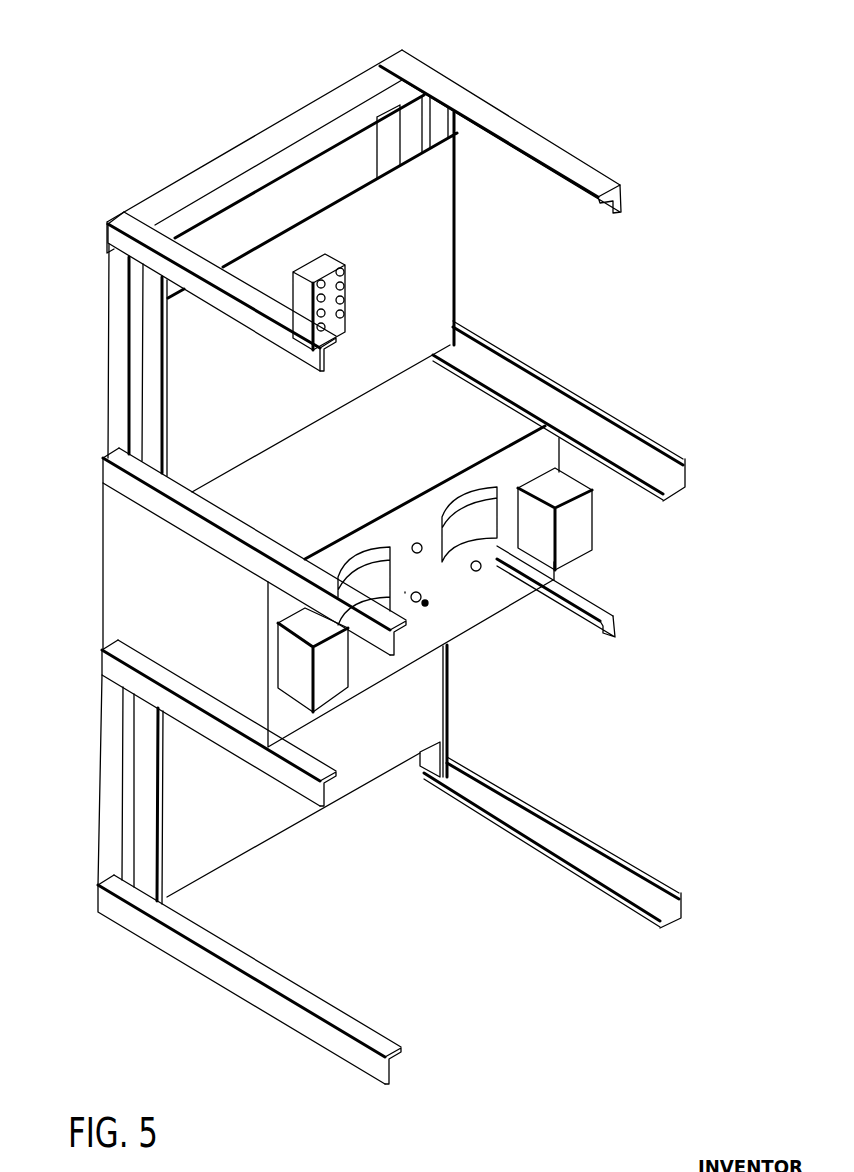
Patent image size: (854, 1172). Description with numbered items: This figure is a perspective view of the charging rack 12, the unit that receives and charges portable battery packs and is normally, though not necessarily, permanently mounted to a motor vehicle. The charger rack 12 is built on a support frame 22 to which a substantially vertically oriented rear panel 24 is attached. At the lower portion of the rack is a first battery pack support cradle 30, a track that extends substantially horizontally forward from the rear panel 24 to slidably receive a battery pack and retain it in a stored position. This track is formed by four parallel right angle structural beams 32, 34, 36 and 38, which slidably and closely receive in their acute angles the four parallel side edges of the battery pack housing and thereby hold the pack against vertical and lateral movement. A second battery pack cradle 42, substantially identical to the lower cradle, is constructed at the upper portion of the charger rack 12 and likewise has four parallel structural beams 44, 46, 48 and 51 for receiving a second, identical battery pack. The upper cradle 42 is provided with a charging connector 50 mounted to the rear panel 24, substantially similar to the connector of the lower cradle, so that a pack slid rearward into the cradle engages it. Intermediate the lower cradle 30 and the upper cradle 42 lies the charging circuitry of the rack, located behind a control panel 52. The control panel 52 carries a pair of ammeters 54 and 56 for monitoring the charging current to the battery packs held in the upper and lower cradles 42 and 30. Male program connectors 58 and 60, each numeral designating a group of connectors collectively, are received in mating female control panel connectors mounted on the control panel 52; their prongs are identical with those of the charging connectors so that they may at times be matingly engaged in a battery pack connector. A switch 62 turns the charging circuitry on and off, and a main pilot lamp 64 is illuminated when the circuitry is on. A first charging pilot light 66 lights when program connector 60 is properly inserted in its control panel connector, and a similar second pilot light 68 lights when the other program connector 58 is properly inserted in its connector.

The charging rack 12 is at (535, 351).
The support frame 22 is at (157, 363).
The rear panel 24 is at (423, 196).
The first battery pack support cradle 30 is at (472, 729).
The structural beam 32 is at (673, 920).
The structural beam 34 is at (385, 1068).
The structural beam 36 is at (303, 787).
The structural beam 38 is at (578, 610).
The second battery pack cradle 42 is at (480, 248).
The structural beam 44 is at (673, 498).
The structural beam 46 is at (190, 527).
The structural beam 48 is at (167, 265).
The charging connector 50 is at (333, 275).
The structural beam 51 is at (545, 150).
The control panel 52 is at (478, 571).
The ammeter 54 is at (425, 606).
The ammeter 56 is at (478, 533).
The male program connector 58 is at (578, 527).
The male program connector 60 is at (293, 657).
The switch 62 is at (375, 585).
The main pilot lamp 64 is at (415, 543).
The first charging pilot light 66 is at (405, 592).
The second pilot light 68 is at (458, 602).